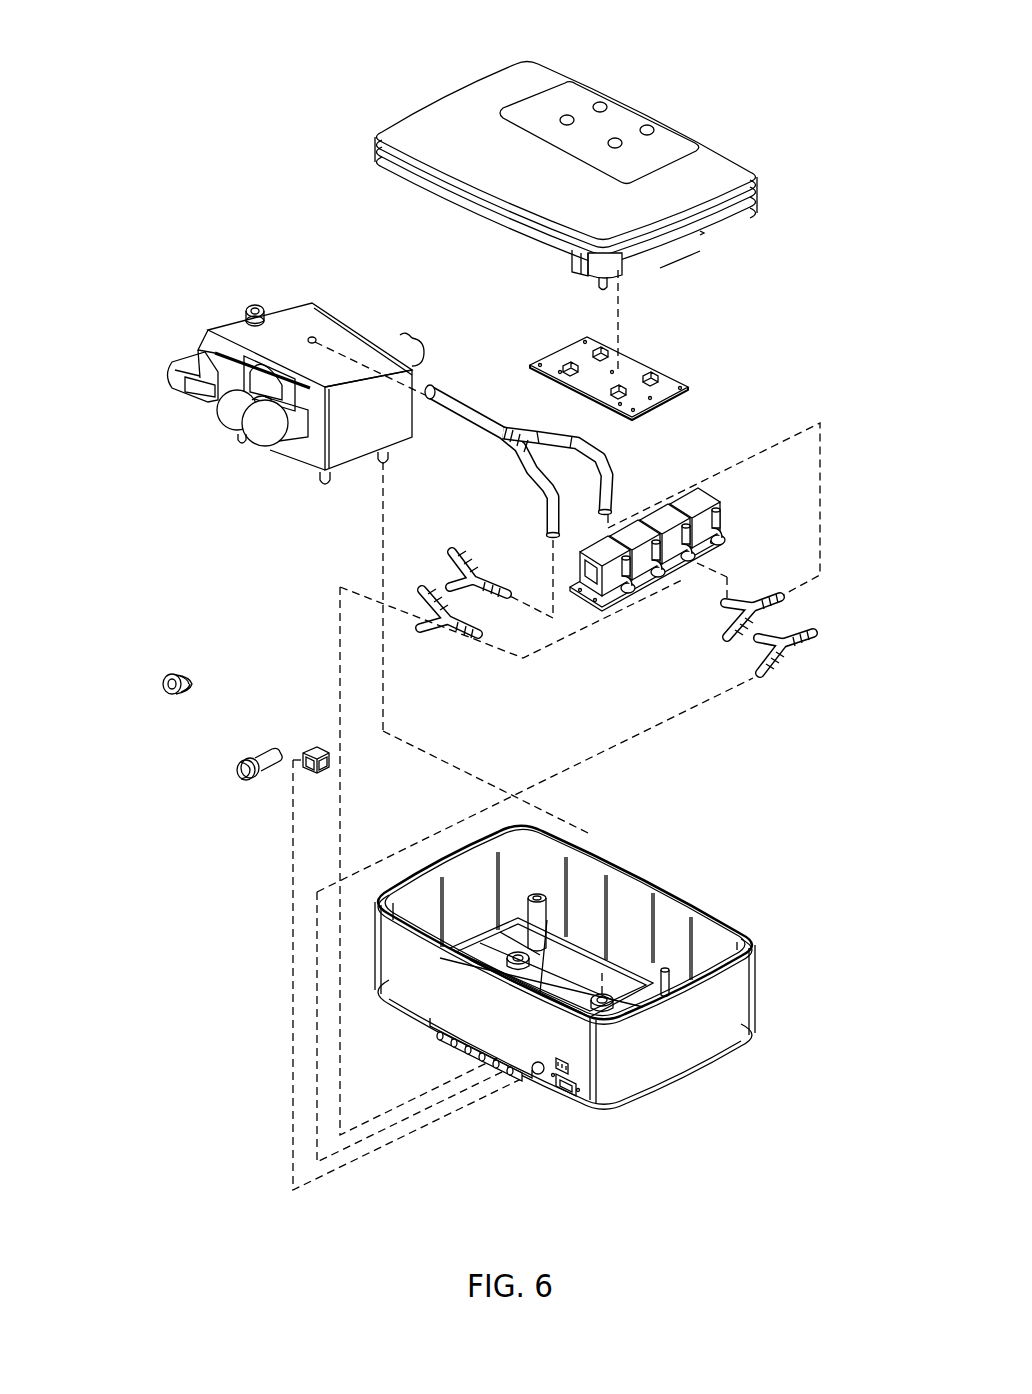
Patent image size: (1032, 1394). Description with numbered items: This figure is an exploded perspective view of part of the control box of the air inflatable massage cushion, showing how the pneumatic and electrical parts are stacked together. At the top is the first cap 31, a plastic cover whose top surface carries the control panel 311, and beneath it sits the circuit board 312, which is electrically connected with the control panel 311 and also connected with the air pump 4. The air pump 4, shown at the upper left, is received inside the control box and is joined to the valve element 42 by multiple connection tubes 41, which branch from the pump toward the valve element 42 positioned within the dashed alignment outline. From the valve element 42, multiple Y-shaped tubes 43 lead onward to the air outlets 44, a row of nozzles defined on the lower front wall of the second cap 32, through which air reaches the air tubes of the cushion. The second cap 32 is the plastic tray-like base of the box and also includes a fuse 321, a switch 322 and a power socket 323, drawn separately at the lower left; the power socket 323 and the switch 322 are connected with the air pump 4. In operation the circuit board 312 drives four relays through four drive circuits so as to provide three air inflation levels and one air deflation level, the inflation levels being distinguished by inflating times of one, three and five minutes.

The first cap 31 is at (538, 80).
The control panel 311 is at (648, 127).
The circuit board 312 is at (655, 367).
The second cap 32 is at (422, 988).
The fuse 321 is at (235, 778).
The switch 322 is at (313, 753).
The power socket 323 is at (167, 690).
The air pump 4 is at (265, 305).
The connection tubes 41 is at (607, 470).
The valve element 42 is at (683, 510).
The Y-shaped tubes 43 is at (780, 600).
The air outlets 44 is at (438, 1038).